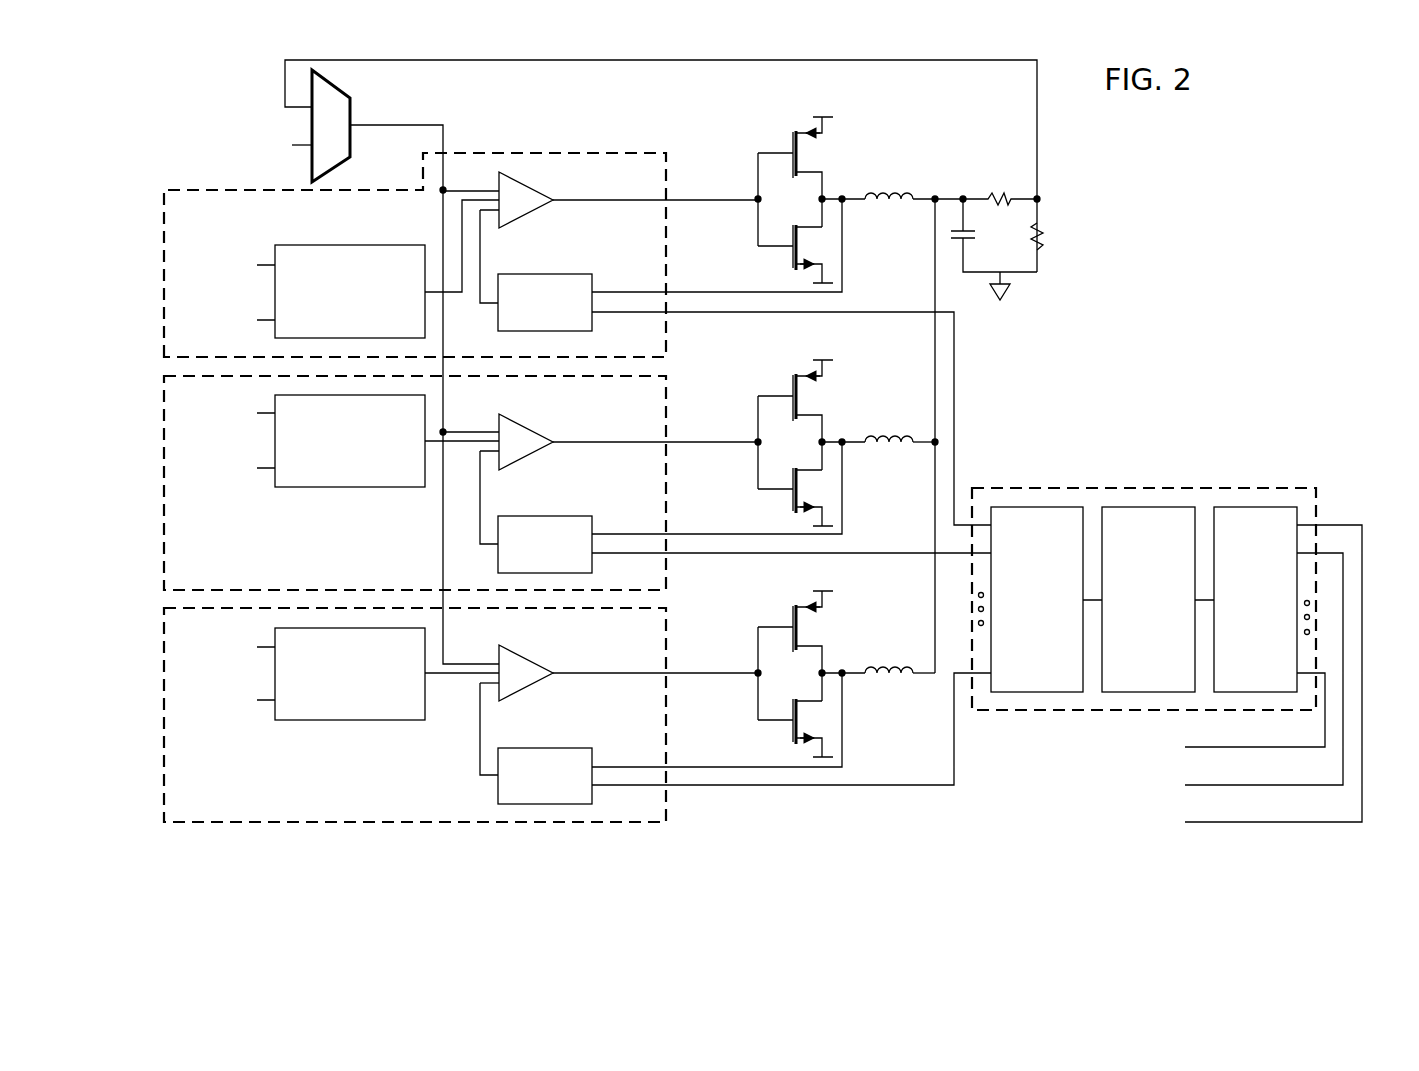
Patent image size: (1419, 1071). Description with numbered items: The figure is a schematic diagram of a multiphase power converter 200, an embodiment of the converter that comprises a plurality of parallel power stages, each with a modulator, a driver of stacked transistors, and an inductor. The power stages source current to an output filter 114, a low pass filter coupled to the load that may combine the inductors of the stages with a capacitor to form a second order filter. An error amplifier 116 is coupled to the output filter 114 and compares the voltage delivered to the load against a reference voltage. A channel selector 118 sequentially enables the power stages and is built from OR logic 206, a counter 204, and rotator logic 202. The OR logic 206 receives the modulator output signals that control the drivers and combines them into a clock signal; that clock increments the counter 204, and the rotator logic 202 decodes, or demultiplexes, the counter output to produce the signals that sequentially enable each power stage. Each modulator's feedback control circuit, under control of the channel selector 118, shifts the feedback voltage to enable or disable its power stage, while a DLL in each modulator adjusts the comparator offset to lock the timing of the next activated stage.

The multiphase power converter 200 is at (1140, 310).
The output filter 114 is at (974, 178).
The error amplifier 116 is at (350, 116).
The channel selector 118 is at (1108, 712).
The rotator logic 202 is at (1037, 599).
The counter 204 is at (1148, 599).
The OR logic 206 is at (1255, 599).